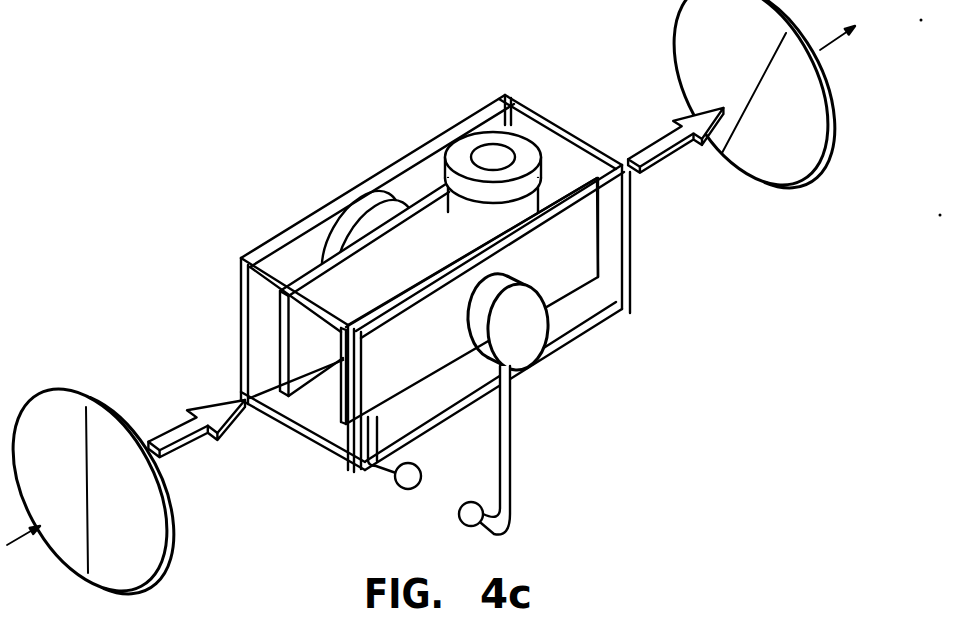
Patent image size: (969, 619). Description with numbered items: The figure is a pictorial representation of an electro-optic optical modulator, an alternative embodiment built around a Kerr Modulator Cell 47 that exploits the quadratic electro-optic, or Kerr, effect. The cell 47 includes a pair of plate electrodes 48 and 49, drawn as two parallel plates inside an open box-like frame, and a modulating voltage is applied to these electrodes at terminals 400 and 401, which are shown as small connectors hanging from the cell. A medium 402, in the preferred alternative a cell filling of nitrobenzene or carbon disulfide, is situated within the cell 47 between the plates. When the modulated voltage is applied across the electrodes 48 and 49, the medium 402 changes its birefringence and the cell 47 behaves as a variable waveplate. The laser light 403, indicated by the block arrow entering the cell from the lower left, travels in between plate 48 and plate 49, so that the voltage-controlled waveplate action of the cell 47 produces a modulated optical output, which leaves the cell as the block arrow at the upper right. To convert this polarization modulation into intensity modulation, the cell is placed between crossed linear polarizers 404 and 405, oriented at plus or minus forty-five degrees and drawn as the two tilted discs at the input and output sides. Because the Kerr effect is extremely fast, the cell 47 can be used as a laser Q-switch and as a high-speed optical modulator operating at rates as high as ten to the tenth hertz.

The Kerr Modulator Cell 47 is at (425, 309).
The plate electrode 48 is at (284, 320).
The plate electrode 49 is at (341, 420).
The terminal 400 is at (405, 482).
The terminal 401 is at (470, 517).
The medium 402 is at (384, 271).
The laser light 403 is at (201, 408).
The crossed linear polarizer 404 is at (174, 552).
The crossed linear polarizer 405 is at (679, 44).